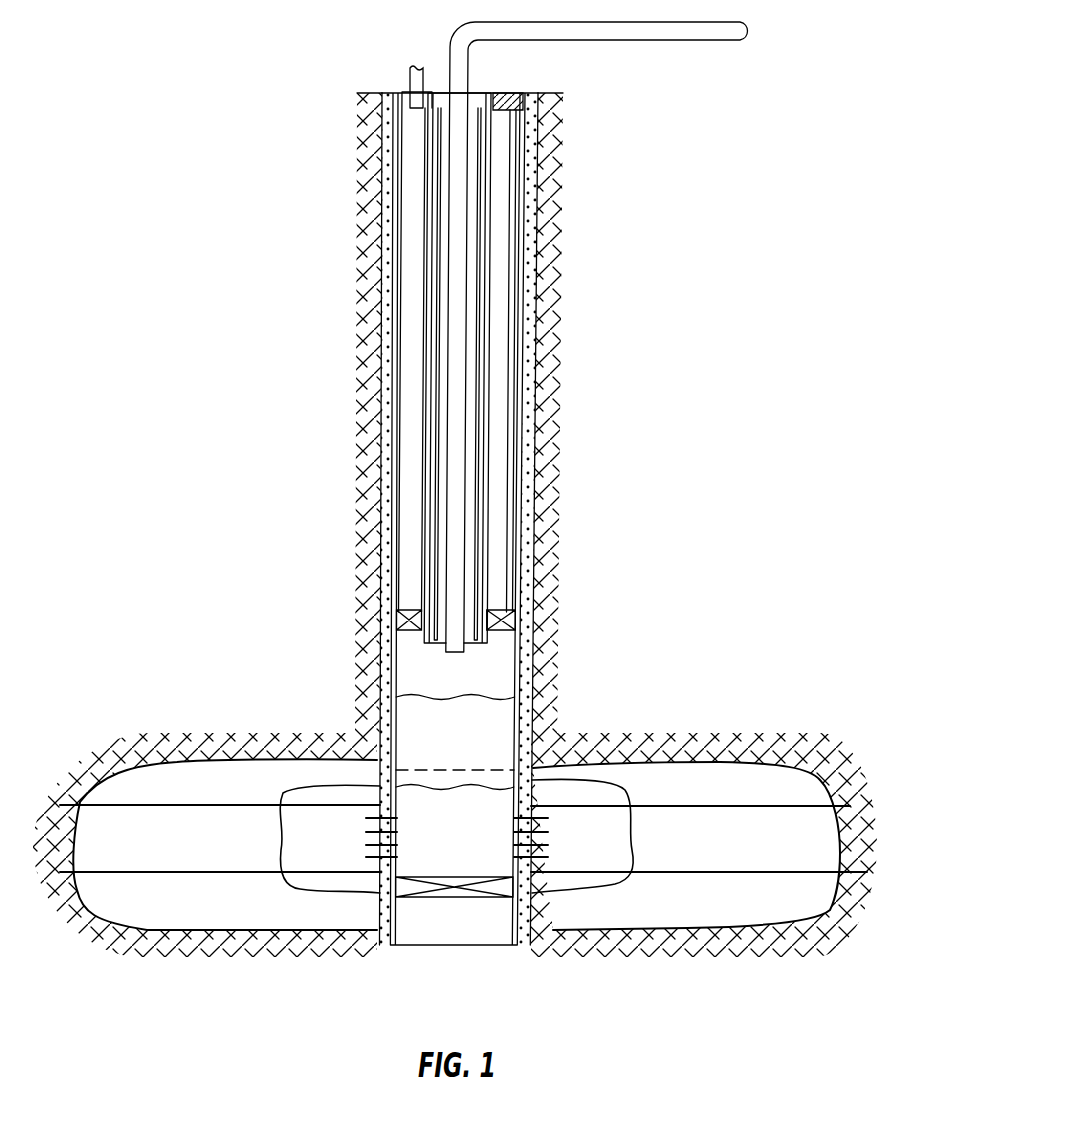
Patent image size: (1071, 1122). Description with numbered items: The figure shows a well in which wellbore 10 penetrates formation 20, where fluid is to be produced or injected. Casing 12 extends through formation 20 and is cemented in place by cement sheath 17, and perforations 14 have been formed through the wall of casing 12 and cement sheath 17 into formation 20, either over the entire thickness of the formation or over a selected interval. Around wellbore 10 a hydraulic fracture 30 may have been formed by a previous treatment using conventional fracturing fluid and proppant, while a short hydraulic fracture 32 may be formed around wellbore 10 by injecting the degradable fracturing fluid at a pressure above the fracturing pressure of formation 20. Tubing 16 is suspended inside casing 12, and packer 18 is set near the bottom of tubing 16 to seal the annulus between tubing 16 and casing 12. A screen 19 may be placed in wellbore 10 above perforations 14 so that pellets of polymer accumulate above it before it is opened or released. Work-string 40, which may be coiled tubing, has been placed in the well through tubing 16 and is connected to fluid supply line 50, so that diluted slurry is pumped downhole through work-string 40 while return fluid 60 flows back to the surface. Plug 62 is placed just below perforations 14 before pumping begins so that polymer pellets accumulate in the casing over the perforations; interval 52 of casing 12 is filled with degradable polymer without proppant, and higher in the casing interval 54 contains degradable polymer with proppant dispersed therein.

The wellbore 10 is at (290, 305).
The casing 12 is at (543, 338).
The perforations 14 is at (373, 790).
The tubing 16 is at (490, 393).
The cement sheath 17 is at (525, 230).
The packer 18 is at (387, 617).
The screen 19 is at (422, 770).
The formation 20 is at (193, 849).
The hydraulic fracture 30 is at (753, 770).
The short hydraulic fracture 32 is at (567, 790).
The work-string 40 is at (447, 167).
The fluid supply line 50 is at (567, 32).
The interval 52 is at (472, 846).
The interval 54 is at (471, 749).
The return fluid 60 is at (408, 72).
The plug 62 is at (432, 898).